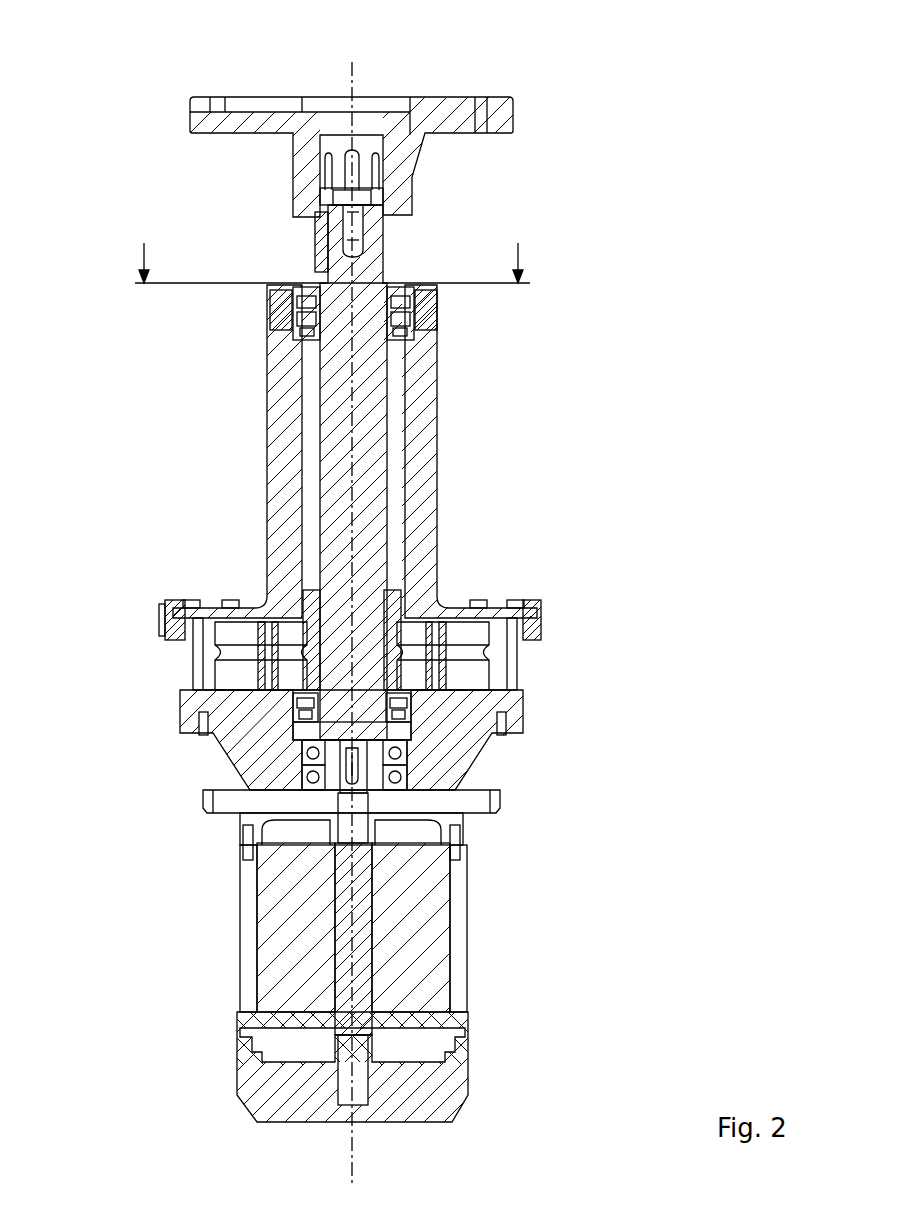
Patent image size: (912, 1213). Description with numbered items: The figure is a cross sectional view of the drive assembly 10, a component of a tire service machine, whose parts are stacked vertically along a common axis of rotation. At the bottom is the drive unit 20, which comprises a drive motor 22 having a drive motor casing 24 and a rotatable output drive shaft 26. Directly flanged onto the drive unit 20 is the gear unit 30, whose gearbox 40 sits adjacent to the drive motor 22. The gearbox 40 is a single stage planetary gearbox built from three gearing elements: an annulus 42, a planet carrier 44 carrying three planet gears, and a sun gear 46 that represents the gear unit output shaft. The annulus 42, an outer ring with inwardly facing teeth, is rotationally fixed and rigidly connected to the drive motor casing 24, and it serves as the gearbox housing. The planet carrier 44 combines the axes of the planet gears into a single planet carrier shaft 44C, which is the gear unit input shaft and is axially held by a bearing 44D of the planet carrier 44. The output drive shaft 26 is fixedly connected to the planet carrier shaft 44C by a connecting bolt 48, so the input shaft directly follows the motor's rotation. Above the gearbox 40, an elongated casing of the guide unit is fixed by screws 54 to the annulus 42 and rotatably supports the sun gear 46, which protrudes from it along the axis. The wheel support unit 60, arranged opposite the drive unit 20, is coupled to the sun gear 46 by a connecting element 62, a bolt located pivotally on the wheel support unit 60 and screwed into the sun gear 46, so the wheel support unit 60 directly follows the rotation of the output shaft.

The drive assembly 10 is at (60, 95).
The drive unit 20 is at (360, 982).
The drive motor 22 is at (283, 962).
The drive motor casing 24 is at (245, 921).
The output drive shaft 26 is at (362, 902).
The gear unit 30 is at (627, 558).
The gearbox 40 is at (558, 665).
The annulus 42 is at (447, 752).
The planet carrier 44 is at (262, 694).
The planet carrier shaft 44C is at (335, 753).
The bearing 44D is at (302, 788).
The sun gear 46 is at (362, 420).
The connecting bolt 48 is at (350, 763).
The screws 54 is at (166, 617).
The wheel support unit 60 is at (540, 125).
The connecting element 62 is at (353, 233).